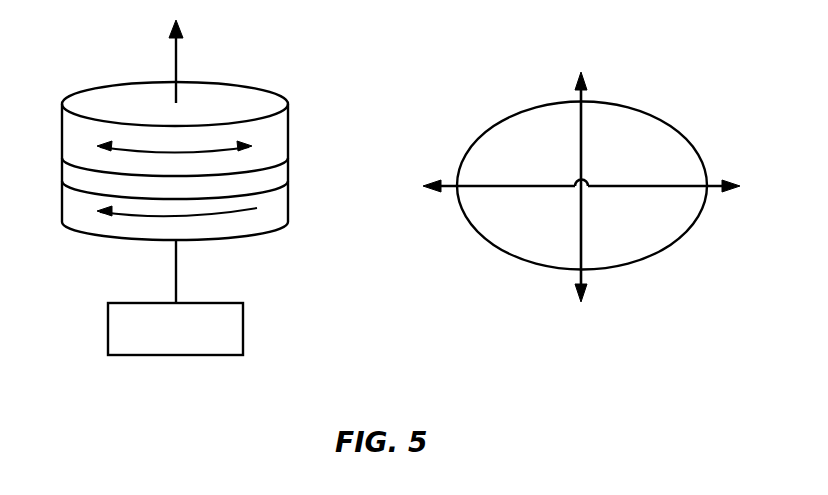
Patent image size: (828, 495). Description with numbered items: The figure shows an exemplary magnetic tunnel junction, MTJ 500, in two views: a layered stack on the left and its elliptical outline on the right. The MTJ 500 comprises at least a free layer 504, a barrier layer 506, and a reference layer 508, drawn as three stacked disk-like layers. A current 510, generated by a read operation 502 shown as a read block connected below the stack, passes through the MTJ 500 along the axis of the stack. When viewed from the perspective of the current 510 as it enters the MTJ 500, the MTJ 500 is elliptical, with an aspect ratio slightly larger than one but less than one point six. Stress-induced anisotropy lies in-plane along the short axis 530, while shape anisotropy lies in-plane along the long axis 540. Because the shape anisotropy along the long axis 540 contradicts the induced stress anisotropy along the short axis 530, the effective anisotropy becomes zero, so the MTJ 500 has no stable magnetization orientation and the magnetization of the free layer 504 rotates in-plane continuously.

The magnetic tunnel junction 500 is at (384, 150).
The read operation 502 is at (222, 303).
The free layer 504 is at (289, 135).
The barrier layer 506 is at (289, 167).
The reference layer 508 is at (289, 200).
The current 510 is at (177, 53).
The short axis 530 is at (582, 142).
The long axis 540 is at (618, 186).